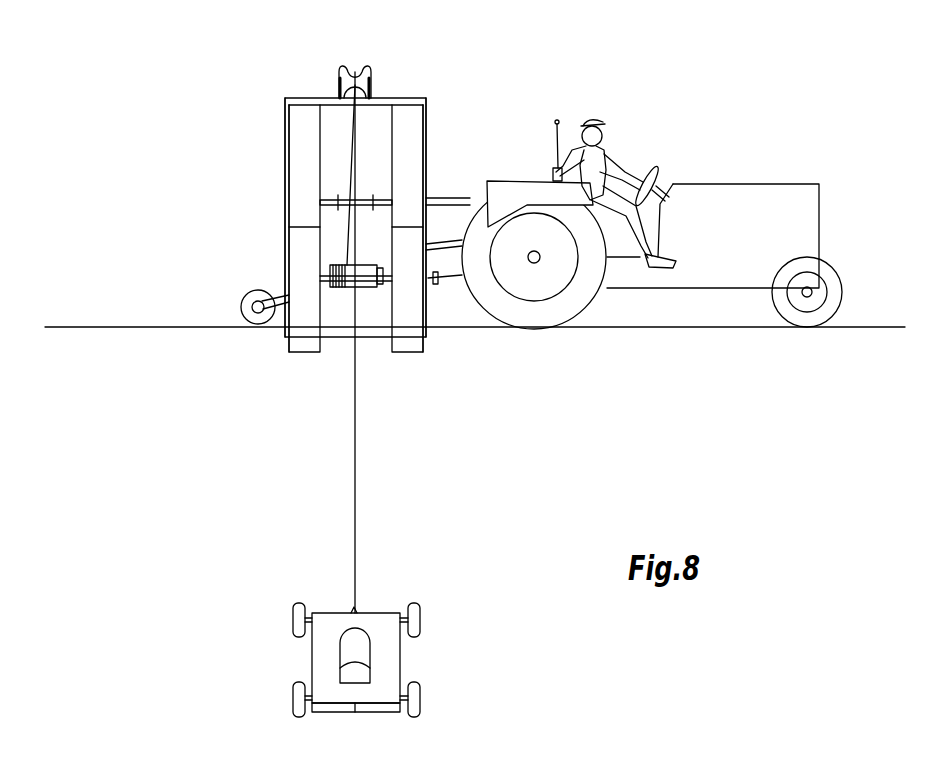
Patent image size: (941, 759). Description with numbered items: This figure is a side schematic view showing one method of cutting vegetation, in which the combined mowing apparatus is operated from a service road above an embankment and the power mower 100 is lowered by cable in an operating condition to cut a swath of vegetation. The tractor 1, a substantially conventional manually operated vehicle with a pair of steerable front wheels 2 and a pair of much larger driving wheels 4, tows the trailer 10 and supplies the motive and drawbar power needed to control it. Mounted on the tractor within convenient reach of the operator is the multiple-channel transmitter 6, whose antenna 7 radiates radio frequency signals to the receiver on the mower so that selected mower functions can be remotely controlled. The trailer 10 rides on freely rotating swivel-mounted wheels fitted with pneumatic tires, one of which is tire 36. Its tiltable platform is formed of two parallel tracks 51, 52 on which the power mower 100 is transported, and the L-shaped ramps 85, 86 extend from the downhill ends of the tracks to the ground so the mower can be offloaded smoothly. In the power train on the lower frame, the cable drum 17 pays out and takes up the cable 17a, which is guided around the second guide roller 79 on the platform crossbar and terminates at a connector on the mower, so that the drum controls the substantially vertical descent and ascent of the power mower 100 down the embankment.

The tractor 1 is at (824, 210).
The steerable front wheels 2 is at (846, 290).
The driving wheels 4 is at (596, 300).
The multiple-channel transmitter 6 is at (549, 170).
The antenna 7 is at (560, 124).
The trailer 10 is at (356, 208).
The cable drum 17 is at (362, 262).
The cable 17a is at (356, 455).
The pneumatic tire 36 is at (258, 290).
The track 51 is at (428, 130).
The track 52 is at (285, 129).
The second guide roller 79 is at (334, 68).
The ramp 85 is at (318, 324).
The ramp 86 is at (422, 324).
The power mower 100 is at (375, 610).